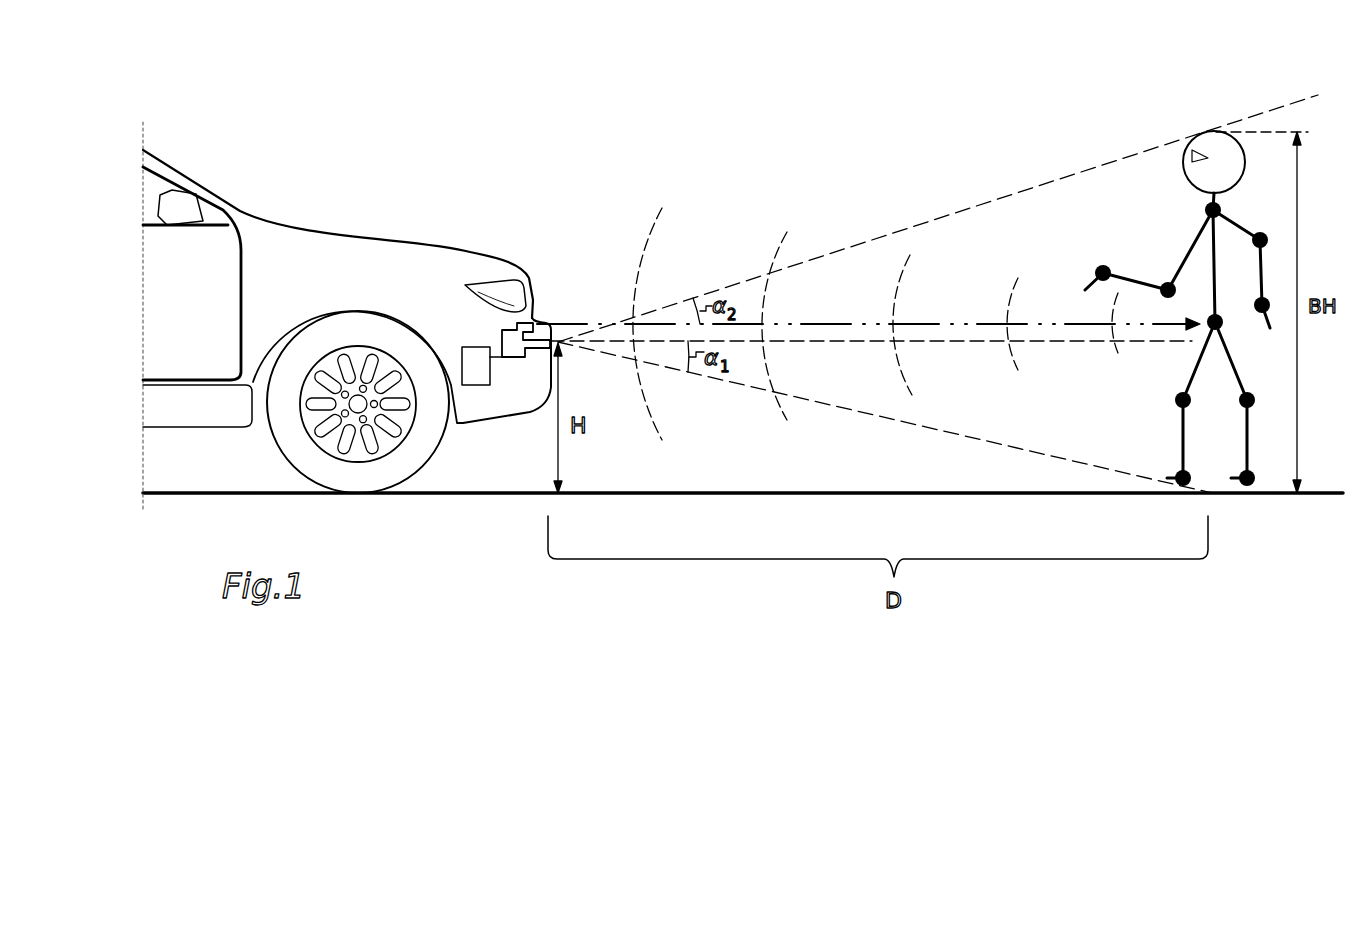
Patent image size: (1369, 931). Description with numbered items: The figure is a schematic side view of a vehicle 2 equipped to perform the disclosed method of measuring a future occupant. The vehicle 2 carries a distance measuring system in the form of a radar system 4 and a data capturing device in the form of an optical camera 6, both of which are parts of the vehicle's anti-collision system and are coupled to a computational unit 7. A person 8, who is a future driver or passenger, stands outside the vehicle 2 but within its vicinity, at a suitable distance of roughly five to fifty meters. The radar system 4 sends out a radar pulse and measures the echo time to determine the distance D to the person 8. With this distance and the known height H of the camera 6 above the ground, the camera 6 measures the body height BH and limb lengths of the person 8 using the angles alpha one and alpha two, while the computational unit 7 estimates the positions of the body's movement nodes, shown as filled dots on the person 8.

The vehicle 2 is at (392, 167).
The radar system 4 is at (516, 326).
The optical camera 6 is at (545, 347).
The computational unit 7 is at (484, 378).
The person 8 is at (1181, 192).